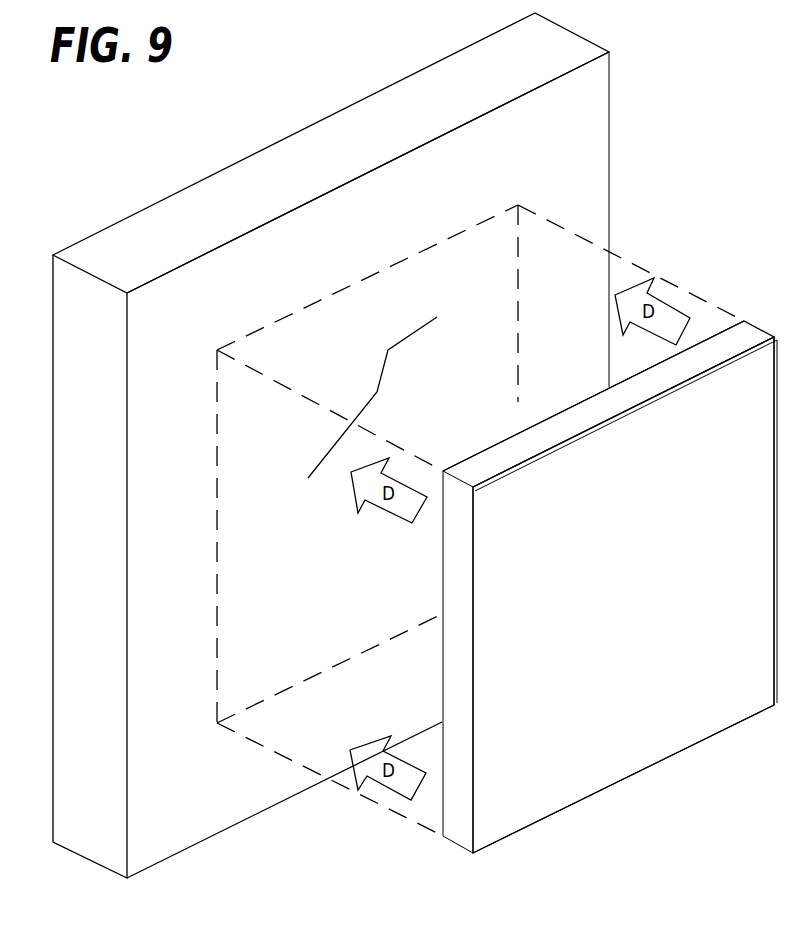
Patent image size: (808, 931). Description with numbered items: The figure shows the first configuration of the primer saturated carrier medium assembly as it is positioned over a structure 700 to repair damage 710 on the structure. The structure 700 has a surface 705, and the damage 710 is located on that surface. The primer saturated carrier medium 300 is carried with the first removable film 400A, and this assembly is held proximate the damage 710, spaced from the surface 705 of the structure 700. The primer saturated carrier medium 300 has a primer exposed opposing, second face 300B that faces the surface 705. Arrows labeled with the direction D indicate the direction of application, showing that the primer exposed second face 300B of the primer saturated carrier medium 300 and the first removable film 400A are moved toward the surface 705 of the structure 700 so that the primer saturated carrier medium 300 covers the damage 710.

The structure 700 is at (331, 445).
The surface of the structure 705 is at (180, 265).
The damage 710 is at (377, 392).
The primer saturated carrier medium 300 is at (702, 355).
The primer exposed opposing, second face 300B is at (568, 405).
The first removable film 400A is at (623, 595).